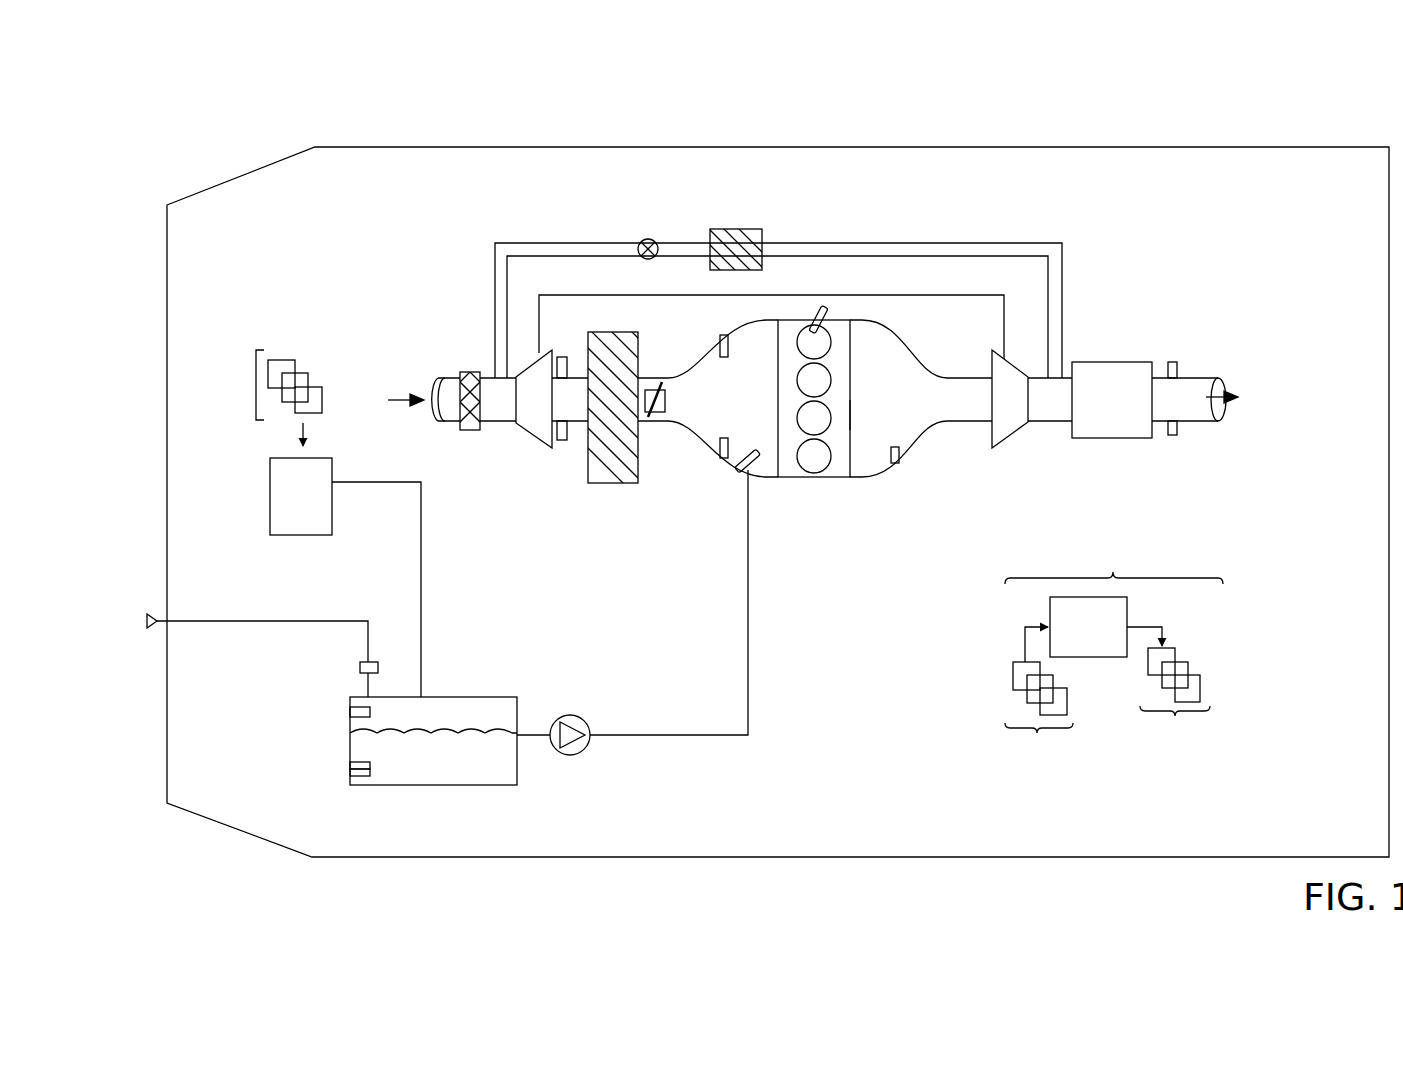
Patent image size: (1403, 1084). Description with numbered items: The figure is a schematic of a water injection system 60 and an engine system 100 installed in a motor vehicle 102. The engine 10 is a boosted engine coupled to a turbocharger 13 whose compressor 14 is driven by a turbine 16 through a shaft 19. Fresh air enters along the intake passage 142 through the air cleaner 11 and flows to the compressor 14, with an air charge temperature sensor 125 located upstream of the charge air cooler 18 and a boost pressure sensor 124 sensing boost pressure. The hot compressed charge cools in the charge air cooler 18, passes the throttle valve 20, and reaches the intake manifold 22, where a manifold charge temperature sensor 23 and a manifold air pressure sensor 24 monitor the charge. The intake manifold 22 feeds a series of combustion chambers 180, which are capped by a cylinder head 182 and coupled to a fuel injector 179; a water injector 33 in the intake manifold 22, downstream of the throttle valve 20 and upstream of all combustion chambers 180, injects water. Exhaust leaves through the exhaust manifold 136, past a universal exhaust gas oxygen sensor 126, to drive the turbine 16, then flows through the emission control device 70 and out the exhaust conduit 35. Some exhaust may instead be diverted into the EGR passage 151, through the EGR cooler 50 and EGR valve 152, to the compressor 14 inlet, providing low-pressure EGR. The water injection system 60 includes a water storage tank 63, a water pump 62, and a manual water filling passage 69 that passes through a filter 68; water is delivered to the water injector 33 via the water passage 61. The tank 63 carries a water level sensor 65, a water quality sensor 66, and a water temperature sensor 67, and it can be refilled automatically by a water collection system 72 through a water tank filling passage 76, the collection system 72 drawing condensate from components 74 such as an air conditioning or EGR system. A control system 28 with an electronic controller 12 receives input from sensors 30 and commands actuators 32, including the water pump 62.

The engine 10 is at (794, 308).
The air cleaner 11 is at (468, 372).
The controller 12 is at (1077, 635).
The turbocharger 13 is at (570, 286).
The compressor 14 is at (543, 409).
The turbine 16 is at (1025, 408).
The charge air cooler 18 is at (610, 332).
The shaft 19 is at (931, 296).
The throttle valve 20 is at (665, 401).
The intake manifold 22 is at (757, 407).
The manifold charge temperature sensor 23 is at (720, 345).
The manifold air pressure sensor 24 is at (720, 446).
The control system 28 is at (1114, 552).
The sensors 30 is at (1037, 702).
The actuators 32 is at (1173, 693).
The water injector 33 is at (741, 468).
The exhaust conduit 35 is at (1208, 378).
The EGR cooler 50 is at (745, 229).
The water injection system 60 is at (550, 812).
The water passage 61 is at (748, 592).
The water pump 62 is at (585, 720).
The water storage tank 63 is at (490, 697).
The water level sensor 65 is at (350, 713).
The water quality sensor 66 is at (349, 764).
The water temperature sensor 67 is at (350, 773).
The filter 68 is at (378, 667).
The water filling passage 69 is at (291, 621).
The emission control device 70 is at (1097, 362).
The water collection system 72 is at (313, 504).
The components 74 is at (256, 383).
The water tank filling passage 76 is at (421, 587).
The engine system 100 is at (1140, 201).
The motor vehicle 102 is at (779, 147).
The boost pressure sensor 124 is at (567, 440).
The air charge temperature sensor 125 is at (557, 357).
The universal exhaust gas oxygen sensor 126 is at (899, 451).
The exhaust manifold 136 is at (937, 407).
The intake passage 142 is at (442, 420).
The EGR passage 151 is at (842, 243).
The EGR valve 152 is at (655, 242).
The fuel injector 179 is at (828, 305).
The combustion chambers 180 is at (831, 342).
The cylinder head 182 is at (851, 401).